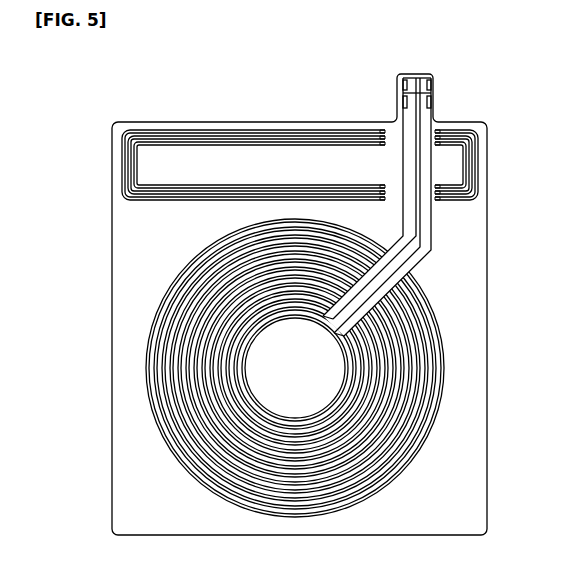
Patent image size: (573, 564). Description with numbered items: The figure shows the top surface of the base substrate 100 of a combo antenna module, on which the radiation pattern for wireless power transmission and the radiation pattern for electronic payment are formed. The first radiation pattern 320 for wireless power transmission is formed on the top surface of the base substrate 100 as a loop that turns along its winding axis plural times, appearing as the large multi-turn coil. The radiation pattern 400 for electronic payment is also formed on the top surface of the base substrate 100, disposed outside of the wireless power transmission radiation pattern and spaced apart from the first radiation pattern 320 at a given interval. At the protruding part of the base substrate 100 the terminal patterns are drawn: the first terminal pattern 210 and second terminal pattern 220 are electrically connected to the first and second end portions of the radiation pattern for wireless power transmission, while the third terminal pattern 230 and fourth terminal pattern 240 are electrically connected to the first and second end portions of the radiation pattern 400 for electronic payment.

The base substrate 100 is at (112, 142).
The radiation pattern for electronic payment 400 is at (232, 130).
The first radiation pattern for wireless power transmission 320 is at (147, 370).
The first terminal pattern 210 is at (437, 112).
The second terminal pattern 220 is at (403, 112).
The third terminal pattern 230 is at (403, 81).
The fourth terminal pattern 240 is at (437, 81).